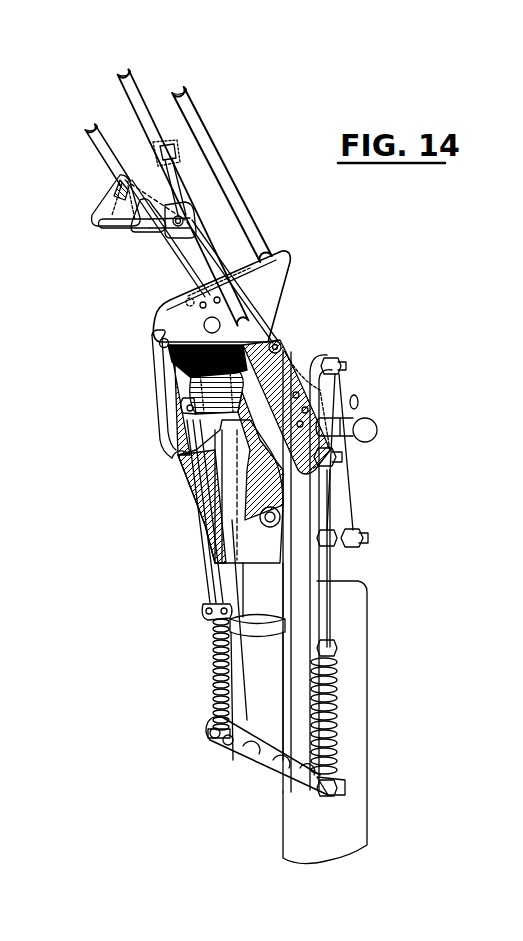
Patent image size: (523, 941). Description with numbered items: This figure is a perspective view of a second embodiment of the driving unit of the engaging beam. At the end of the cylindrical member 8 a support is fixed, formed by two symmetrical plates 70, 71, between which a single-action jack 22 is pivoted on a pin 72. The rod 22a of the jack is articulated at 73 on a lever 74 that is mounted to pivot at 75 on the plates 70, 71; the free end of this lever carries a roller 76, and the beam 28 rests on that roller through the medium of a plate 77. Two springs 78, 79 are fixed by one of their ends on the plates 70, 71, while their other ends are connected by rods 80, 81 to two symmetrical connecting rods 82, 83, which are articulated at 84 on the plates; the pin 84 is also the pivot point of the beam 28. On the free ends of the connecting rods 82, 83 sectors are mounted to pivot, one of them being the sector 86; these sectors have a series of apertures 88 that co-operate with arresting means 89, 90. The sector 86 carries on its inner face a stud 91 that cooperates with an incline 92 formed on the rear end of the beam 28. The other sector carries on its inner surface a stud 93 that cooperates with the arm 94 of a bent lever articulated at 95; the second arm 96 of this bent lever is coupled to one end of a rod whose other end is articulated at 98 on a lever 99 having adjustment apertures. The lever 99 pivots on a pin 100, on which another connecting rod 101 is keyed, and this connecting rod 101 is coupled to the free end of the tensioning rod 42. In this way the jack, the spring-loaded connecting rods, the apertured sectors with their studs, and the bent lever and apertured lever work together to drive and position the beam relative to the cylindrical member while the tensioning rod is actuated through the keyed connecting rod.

The cylindrical member 8 is at (343, 808).
The single-action jack 22 is at (257, 723).
The rod of the jack 22a is at (252, 583).
The beam 28 is at (213, 113).
The tensioning rod 42 is at (133, 82).
The plate 70 is at (280, 763).
The plate 71 is at (213, 712).
The pin 72 is at (343, 752).
The articulation 73 is at (322, 513).
The lever 74 is at (227, 477).
The pivot 75 is at (368, 539).
The roller 76 is at (193, 385).
The plate 77 is at (163, 358).
The spring 78 is at (340, 705).
The spring 79 is at (213, 685).
The rod 80 is at (320, 604).
The rod 81 is at (213, 563).
The connecting rod 82 is at (276, 518).
The connecting rod 83 is at (177, 450).
The pin 84 is at (337, 461).
The sector 86 is at (342, 370).
The apertures 88 is at (262, 384).
The arresting means 89 is at (368, 432).
The arresting means 90 is at (187, 408).
The stud 91 is at (193, 224).
The incline 92 is at (292, 345).
The stud 93 is at (235, 320).
The arm of bent lever 94 is at (183, 403).
The articulation 95 is at (160, 343).
The second arm of bent lever 96 is at (188, 302).
The articulation 98 is at (113, 180).
The lever 99 is at (97, 203).
The pin 100 is at (120, 225).
The connecting rod 101 is at (160, 168).